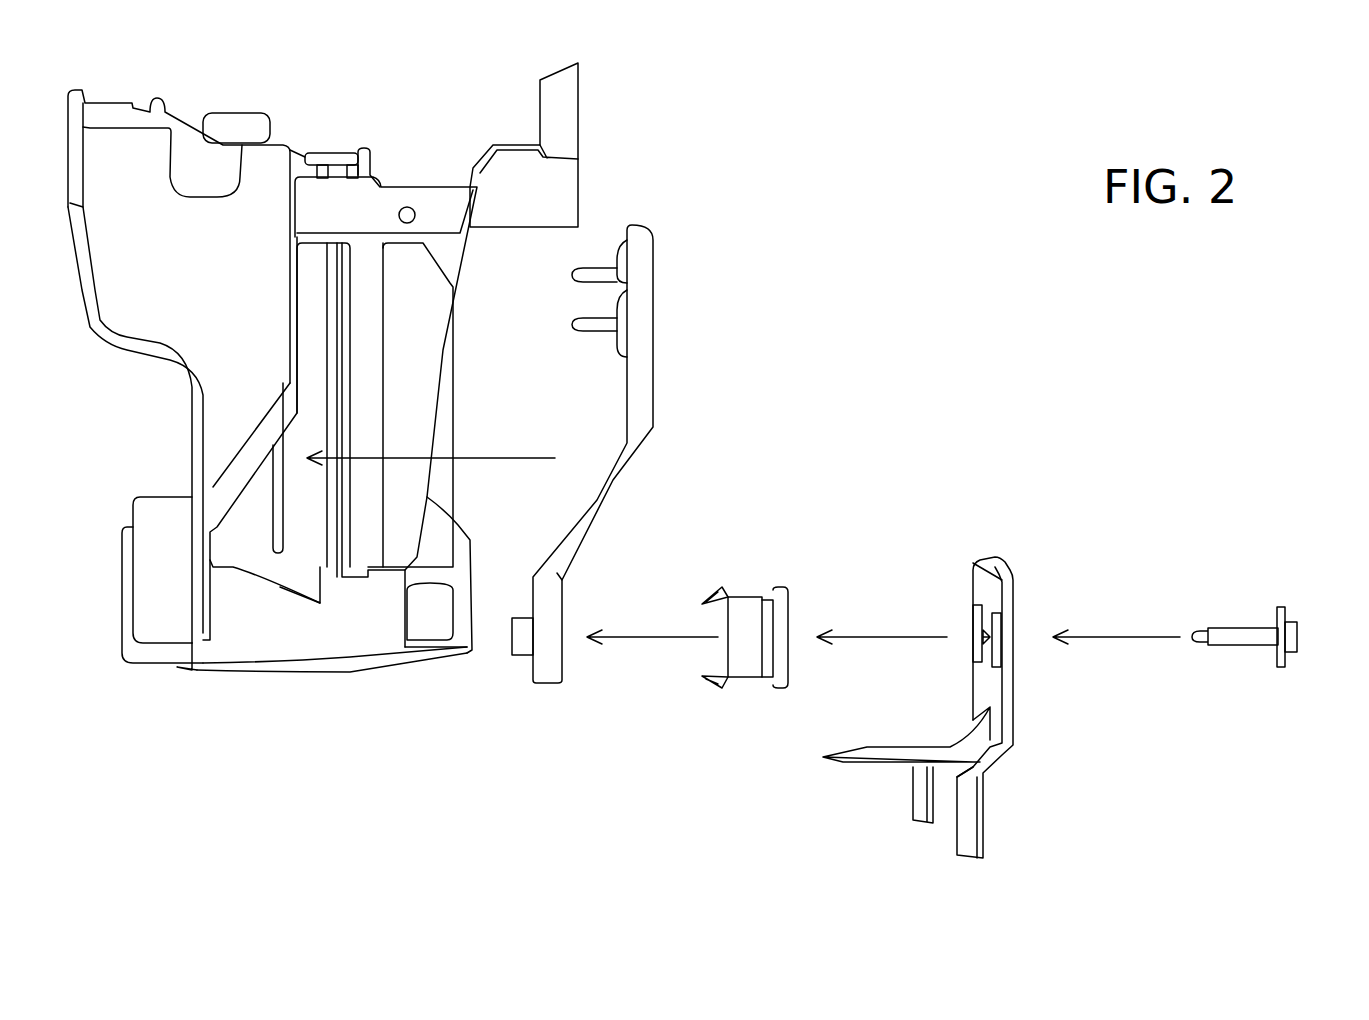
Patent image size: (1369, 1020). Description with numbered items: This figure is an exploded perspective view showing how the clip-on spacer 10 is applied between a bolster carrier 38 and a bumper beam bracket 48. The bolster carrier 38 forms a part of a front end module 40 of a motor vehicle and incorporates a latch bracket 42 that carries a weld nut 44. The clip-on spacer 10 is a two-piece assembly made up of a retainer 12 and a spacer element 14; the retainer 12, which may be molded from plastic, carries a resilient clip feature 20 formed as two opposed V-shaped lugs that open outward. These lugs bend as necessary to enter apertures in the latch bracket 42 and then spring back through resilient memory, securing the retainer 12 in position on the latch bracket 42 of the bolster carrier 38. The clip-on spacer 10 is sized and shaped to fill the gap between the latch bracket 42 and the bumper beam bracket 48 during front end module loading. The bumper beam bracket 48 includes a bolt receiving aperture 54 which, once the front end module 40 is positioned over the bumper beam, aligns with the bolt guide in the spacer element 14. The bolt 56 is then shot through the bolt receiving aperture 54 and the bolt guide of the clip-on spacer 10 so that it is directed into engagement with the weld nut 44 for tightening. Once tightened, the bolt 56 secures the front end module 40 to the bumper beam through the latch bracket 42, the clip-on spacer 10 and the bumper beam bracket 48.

The clip-on spacer 10 is at (798, 560).
The retainer 12 is at (743, 670).
The spacer element 14 is at (765, 670).
The resilient clip feature 20 is at (702, 604).
The bolster carrier 38 is at (413, 402).
The front end module 40 is at (840, 146).
The latch bracket 42 is at (638, 450).
The weld nut 44 is at (520, 647).
The bumper beam bracket 48 is at (1010, 697).
The bolt receiving aperture 54 is at (982, 637).
The bolt 56 is at (1290, 652).